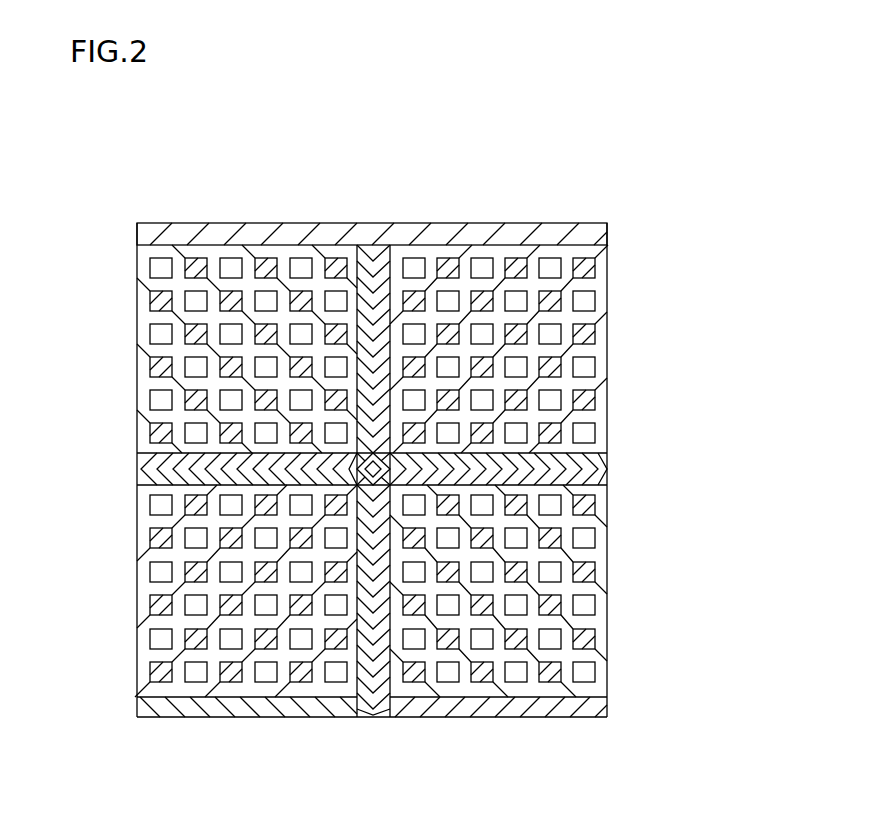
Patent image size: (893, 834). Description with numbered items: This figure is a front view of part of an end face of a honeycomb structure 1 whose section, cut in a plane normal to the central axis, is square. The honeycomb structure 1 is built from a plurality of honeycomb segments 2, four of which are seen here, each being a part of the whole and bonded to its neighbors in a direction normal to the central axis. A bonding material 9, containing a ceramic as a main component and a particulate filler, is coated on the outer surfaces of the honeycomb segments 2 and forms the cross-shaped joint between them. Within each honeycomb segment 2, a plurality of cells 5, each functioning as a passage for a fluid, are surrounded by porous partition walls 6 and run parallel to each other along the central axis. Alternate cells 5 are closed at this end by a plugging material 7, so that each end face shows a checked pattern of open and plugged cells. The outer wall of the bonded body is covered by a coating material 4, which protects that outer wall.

The honeycomb structure 1 is at (280, 158).
The honeycomb segment 2 is at (114, 324).
The coating material 4 is at (458, 233).
The cell 5 is at (233, 266).
The partition wall 6 is at (284, 262).
The plugging material 7 is at (196, 266).
The bonding material 9 is at (398, 243).